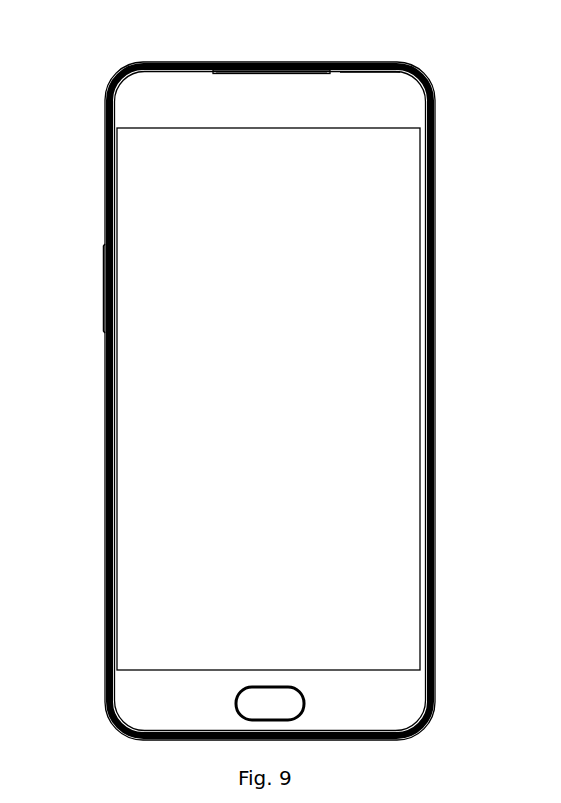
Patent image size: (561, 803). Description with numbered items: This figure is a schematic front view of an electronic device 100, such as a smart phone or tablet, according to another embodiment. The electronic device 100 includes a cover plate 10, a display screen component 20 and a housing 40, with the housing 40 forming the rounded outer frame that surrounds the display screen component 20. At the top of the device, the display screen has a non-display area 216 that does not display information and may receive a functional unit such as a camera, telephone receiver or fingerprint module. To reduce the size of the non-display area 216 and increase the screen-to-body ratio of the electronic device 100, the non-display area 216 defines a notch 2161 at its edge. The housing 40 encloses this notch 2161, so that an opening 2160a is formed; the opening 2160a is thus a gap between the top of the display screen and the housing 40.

The electronic device 100 is at (264, 376).
The cover plate 10 is at (137, 88).
The display screen component 20 is at (402, 395).
The housing 40 is at (433, 595).
The non-display area 216 is at (380, 85).
The notch 2161 is at (233, 67).
The opening 2160a is at (270, 66).